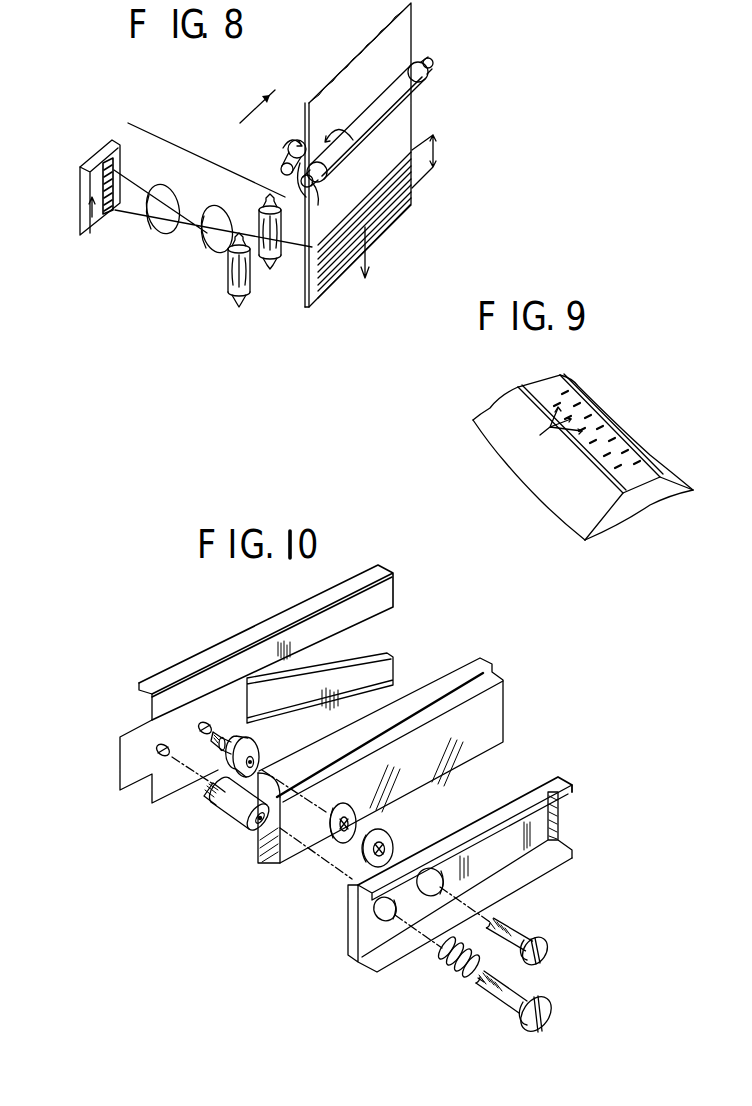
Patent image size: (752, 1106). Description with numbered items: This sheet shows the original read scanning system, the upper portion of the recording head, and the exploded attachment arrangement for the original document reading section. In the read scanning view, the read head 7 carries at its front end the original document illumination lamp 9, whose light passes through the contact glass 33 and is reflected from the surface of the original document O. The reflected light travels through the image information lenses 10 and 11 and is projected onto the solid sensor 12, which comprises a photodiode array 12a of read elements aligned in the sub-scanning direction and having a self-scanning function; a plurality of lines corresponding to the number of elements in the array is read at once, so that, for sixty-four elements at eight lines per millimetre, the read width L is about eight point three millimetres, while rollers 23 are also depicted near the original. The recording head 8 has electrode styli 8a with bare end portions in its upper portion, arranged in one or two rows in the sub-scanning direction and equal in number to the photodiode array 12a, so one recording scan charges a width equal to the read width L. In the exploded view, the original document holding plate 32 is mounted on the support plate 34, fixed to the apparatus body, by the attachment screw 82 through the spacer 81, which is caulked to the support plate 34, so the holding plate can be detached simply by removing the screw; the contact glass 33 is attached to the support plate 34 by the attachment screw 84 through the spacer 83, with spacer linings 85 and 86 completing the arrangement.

In FIG. 8, the read head 7 is at (206, 160).
In FIG. 8, the original document illumination lamp 9 is at (228, 291).
In FIG. 8, the image information lens 10 is at (213, 247).
In FIG. 8, the image information lens 11 is at (163, 230).
In FIG. 8, the solid sensor 12 is at (80, 231).
In FIG. 8, the photodiode array 12a is at (102, 180).
In FIG. 8, the feed rollers 23 is at (311, 188).
In FIG. 8, the original document O is at (411, 38).
In FIG. 8, the read width L is at (435, 143).
In FIG. 9, the recording head 8 is at (642, 508).
In FIG. 9, the electrode styli 8a is at (549, 427).
In FIG. 10, the original document holding plate 32 is at (350, 934).
In FIG. 10, the contact glass 33 is at (273, 850).
In FIG. 10, the support plate 34 is at (120, 768).
In FIG. 10, the spacer 81 is at (237, 826).
In FIG. 10, the attachment screw 82 is at (510, 1017).
In FIG. 10, the spacer 83 is at (258, 738).
In FIG. 10, the attachment screw 84 is at (523, 938).
In FIG. 10, the spacer lining 85 is at (348, 812).
In FIG. 10, the spacer lining 86 is at (390, 842).